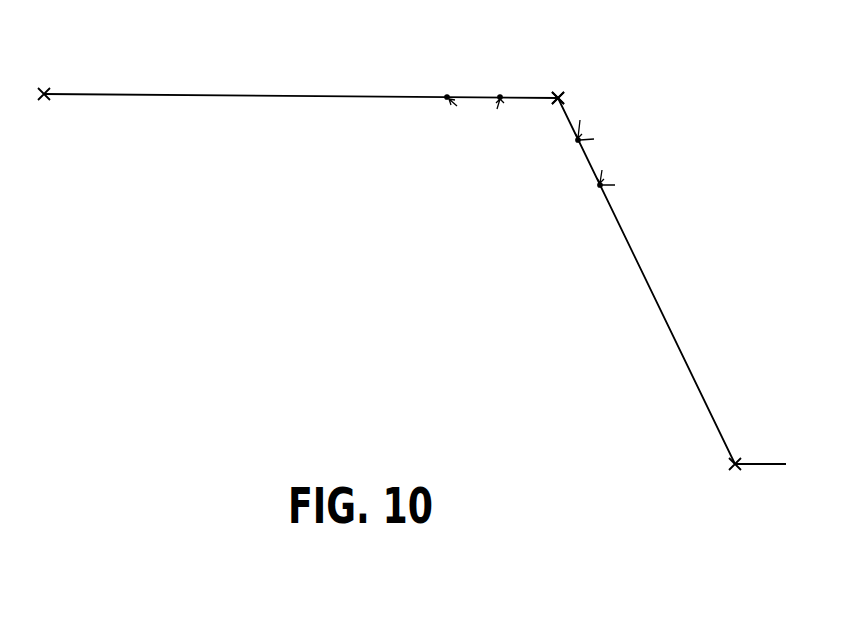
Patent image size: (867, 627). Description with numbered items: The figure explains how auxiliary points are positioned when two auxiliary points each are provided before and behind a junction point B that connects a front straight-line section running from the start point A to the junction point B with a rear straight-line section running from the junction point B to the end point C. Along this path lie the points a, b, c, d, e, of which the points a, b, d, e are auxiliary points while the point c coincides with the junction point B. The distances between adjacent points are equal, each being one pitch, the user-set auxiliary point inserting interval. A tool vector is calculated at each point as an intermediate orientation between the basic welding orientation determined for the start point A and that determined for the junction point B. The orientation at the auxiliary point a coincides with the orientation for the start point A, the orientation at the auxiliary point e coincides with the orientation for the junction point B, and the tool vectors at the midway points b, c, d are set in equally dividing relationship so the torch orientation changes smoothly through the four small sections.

The start point A is at (36, 83).
The junction point B is at (555, 72).
The end point C is at (724, 474).
The auxiliary point a is at (449, 96).
The auxiliary point b is at (518, 96).
The point coincident with junction point c is at (552, 85).
The auxiliary point d is at (599, 126).
The auxiliary point e is at (620, 172).